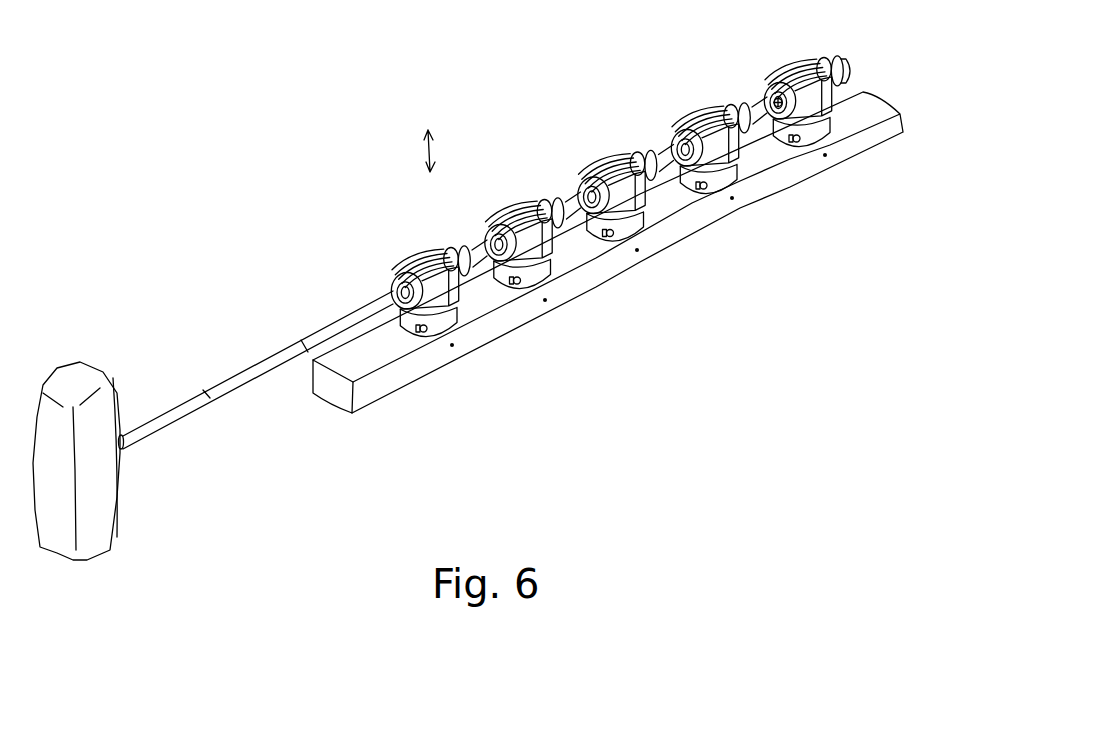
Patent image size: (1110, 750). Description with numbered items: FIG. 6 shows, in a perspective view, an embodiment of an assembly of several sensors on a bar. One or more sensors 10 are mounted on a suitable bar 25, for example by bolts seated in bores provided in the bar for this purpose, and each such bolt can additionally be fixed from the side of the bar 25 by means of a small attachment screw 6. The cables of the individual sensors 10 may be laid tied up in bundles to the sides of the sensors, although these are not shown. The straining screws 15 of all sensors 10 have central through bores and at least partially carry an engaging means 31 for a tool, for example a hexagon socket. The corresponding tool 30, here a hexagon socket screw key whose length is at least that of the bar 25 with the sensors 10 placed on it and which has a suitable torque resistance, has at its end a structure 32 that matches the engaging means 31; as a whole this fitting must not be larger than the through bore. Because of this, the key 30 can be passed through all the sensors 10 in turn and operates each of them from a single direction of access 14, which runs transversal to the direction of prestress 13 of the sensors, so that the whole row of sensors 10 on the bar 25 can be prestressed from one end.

The attachment screw 6 is at (637, 250).
The sensor 10 is at (572, 218).
The direction of prestress 13 is at (449, 151).
The direction of access 14 is at (257, 340).
The straining screw 15 is at (394, 256).
The bar 25 is at (384, 390).
The tool (key) 30 is at (155, 455).
The engaging means 31 is at (729, 74).
The structure 32 is at (625, 144).